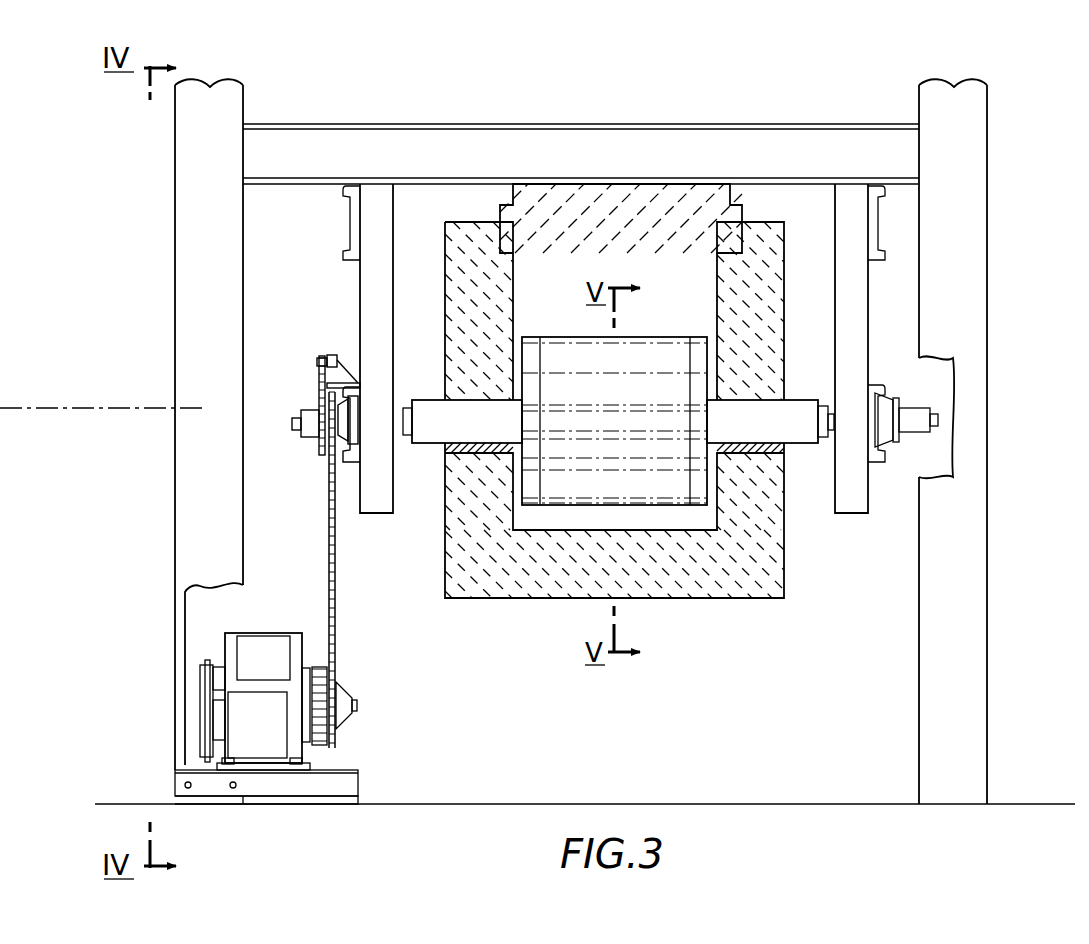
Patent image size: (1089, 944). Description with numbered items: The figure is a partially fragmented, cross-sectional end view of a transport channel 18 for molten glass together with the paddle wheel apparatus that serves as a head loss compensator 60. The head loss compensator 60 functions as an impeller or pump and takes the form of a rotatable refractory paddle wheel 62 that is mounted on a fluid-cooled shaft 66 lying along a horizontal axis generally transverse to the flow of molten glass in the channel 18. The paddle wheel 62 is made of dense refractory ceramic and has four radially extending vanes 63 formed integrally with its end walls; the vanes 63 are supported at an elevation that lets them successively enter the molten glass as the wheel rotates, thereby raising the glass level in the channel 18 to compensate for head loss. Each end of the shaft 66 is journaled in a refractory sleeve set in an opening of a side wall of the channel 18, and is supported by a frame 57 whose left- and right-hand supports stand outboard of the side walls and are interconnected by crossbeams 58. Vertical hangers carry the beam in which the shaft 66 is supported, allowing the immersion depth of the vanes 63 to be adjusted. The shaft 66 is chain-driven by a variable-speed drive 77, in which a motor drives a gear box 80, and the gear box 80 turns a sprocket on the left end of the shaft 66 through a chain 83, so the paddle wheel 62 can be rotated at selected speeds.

The channel 18 is at (618, 415).
The frame 57 is at (1002, 257).
The crossbeam 58 is at (423, 145).
The head loss compensator 60 is at (581, 112).
The paddle wheel 62 is at (592, 488).
The vane 63 is at (618, 411).
The shaft 66 is at (918, 408).
The variable-speed drive 77 is at (366, 714).
The gear box 80 is at (263, 633).
The chain 83 is at (337, 613).